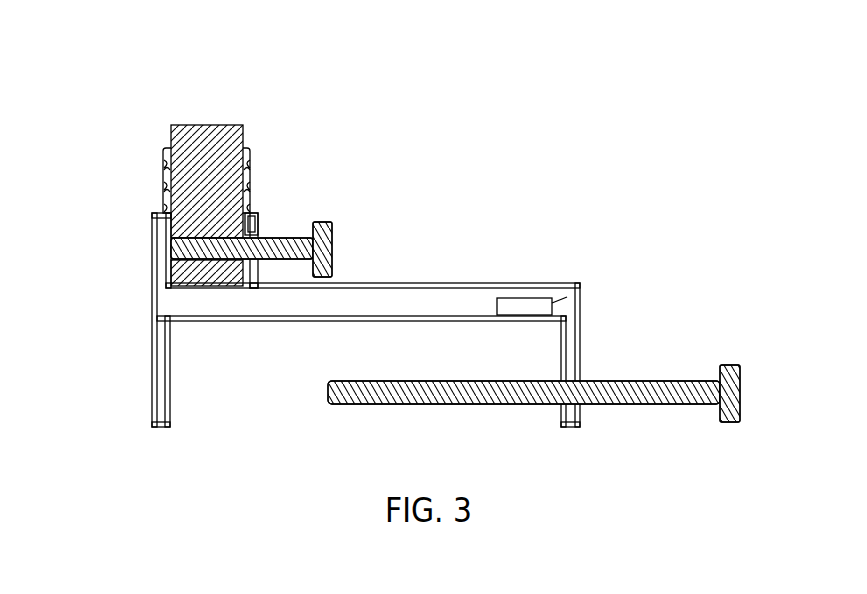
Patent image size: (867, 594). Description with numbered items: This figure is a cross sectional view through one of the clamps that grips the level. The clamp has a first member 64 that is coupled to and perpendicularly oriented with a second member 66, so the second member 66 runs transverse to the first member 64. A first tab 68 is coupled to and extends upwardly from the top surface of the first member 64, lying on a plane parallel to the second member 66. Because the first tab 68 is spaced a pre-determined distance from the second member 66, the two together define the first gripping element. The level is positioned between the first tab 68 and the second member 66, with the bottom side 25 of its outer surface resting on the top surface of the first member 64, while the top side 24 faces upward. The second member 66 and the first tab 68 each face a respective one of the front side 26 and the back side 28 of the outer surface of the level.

The top side 24 is at (210, 125).
The bottom side 25 is at (220, 285).
The front side 26 is at (250, 148).
The back side 28 is at (168, 142).
The first member 64 is at (417, 284).
The second member 66 is at (152, 356).
The first tab 68 is at (263, 223).